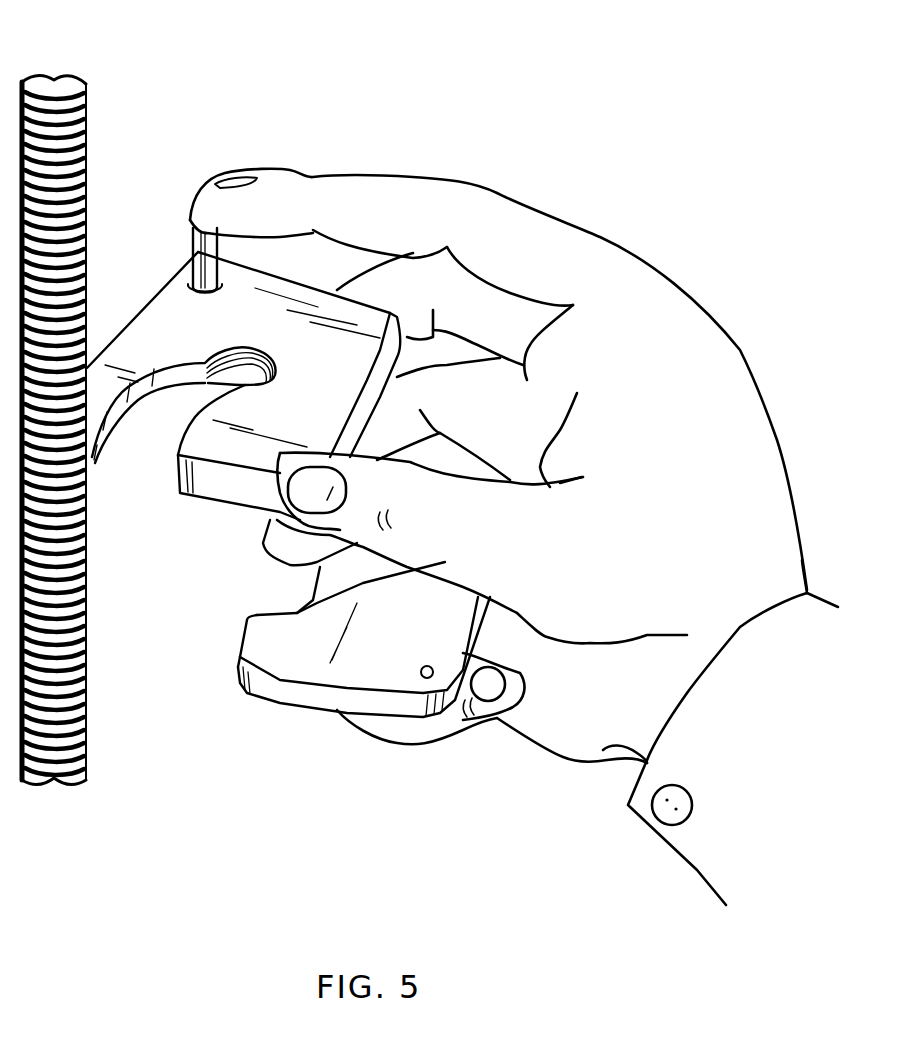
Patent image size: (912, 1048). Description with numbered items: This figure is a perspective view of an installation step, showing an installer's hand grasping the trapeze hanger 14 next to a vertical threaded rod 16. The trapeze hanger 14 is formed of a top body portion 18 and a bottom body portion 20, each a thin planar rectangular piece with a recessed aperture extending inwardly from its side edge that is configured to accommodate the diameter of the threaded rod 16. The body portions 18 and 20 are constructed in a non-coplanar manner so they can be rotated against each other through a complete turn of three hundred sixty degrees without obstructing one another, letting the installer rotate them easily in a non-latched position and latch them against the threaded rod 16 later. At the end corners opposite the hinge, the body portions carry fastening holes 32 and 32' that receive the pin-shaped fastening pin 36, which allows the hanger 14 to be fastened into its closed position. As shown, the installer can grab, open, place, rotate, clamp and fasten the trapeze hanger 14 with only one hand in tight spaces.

The trapeze hanger 14 is at (288, 471).
The threaded rod 16 is at (87, 147).
The top body portion 18 is at (205, 505).
The bottom body portion 20 is at (283, 707).
The fastening hole 32 is at (165, 267).
The fastening hole 32' is at (402, 742).
The fastening pin 36 is at (200, 255).